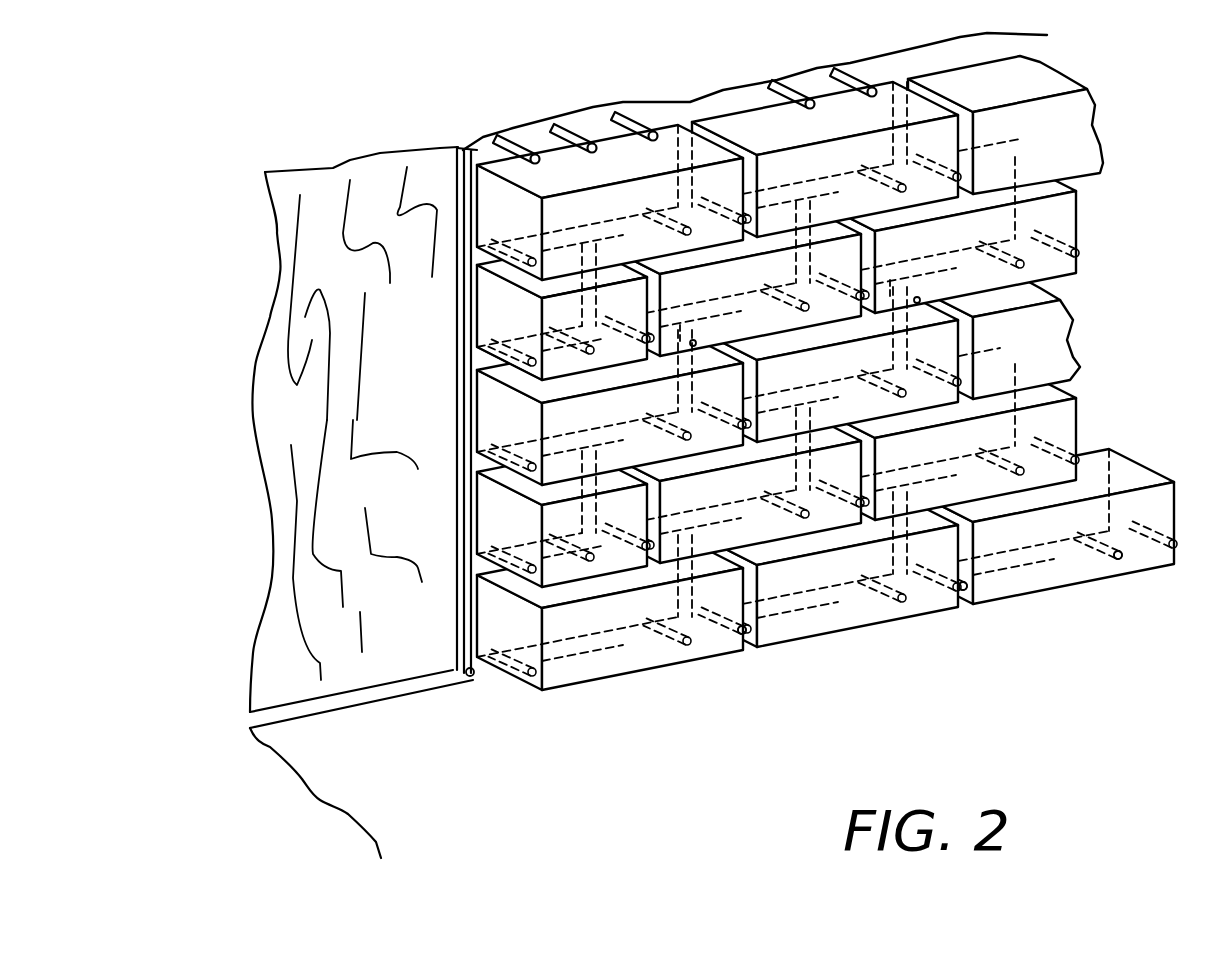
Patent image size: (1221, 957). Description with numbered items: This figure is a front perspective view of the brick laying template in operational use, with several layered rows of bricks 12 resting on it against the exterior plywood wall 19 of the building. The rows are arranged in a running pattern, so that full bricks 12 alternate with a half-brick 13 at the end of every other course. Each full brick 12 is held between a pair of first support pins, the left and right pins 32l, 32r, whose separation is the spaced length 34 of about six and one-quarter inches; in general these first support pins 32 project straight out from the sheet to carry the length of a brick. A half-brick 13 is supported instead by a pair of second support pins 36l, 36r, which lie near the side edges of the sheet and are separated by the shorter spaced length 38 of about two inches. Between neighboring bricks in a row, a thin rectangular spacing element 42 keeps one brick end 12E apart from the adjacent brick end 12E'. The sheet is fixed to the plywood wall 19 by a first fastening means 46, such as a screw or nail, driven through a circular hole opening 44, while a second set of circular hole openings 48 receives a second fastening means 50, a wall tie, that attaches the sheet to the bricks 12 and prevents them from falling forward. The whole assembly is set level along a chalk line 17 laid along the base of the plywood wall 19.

The brick 12 is at (758, 376).
The brick end 12E is at (776, 637).
The brick end 12E' is at (811, 621).
The half-brick 13 is at (562, 300).
The chalk line 17 is at (338, 690).
The exterior plywood wall 19 is at (370, 187).
The first support pin 32 is at (727, 628).
The left first support pin 32l is at (985, 572).
The right first support pin 32r is at (1097, 552).
The spaced length 34 is at (930, 563).
The left second support pin 36l is at (507, 345).
The right second support pin 36r is at (562, 332).
The spaced length 38 is at (525, 330).
The spacing element 42 is at (697, 178).
The circular hole opening 44 is at (458, 670).
The first fastening means 46 is at (472, 676).
The circular hole opening 48 is at (685, 343).
The second fastening means 50 is at (693, 343).